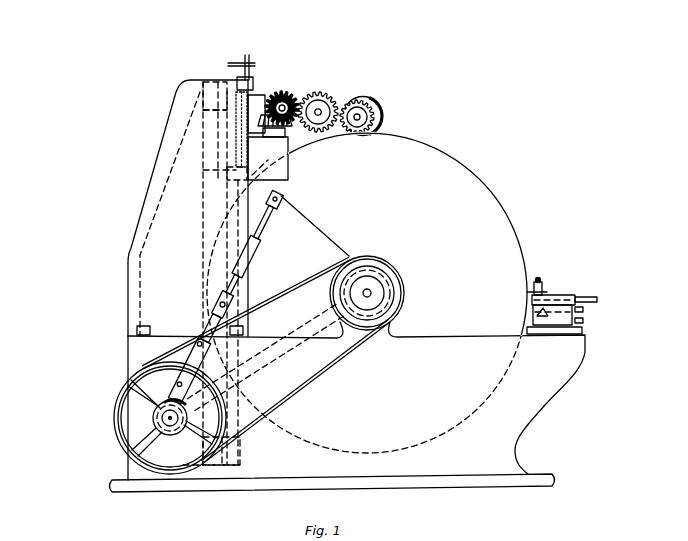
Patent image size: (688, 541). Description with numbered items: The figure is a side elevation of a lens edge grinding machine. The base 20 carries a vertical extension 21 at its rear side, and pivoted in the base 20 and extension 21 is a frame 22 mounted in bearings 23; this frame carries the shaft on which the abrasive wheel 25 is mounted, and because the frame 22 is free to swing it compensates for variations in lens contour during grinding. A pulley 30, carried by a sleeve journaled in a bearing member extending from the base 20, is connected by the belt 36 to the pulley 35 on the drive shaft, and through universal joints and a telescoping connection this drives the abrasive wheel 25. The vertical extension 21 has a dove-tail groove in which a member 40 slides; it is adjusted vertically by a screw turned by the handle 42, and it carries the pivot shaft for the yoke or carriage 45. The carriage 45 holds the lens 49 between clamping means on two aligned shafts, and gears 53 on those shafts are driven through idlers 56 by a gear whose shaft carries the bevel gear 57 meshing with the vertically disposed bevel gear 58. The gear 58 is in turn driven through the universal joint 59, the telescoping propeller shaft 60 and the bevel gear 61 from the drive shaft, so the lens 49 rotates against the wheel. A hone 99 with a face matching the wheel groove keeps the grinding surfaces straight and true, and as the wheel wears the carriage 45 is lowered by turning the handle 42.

The base 20 is at (530, 405).
The vertical extension 21 is at (167, 217).
The frame 22 is at (307, 238).
The bearings 23 is at (203, 80).
The abrasive wheel 25 is at (492, 223).
The pulley 30 is at (333, 293).
The pulley 35 is at (130, 449).
The belt 36 is at (309, 385).
The member 40 is at (262, 95).
The handle 42 is at (246, 60).
The yoke or carriage 45 is at (335, 98).
The lens 49 is at (384, 113).
The gears 53 is at (376, 111).
The idlers 56 is at (322, 93).
The bevel gear 57 is at (288, 95).
The bevel gear 58 is at (291, 124).
The universal joint 59 is at (288, 194).
The telescoping propeller shaft 60 is at (250, 259).
The bevel gear 61 is at (152, 405).
The hone 99 is at (559, 297).